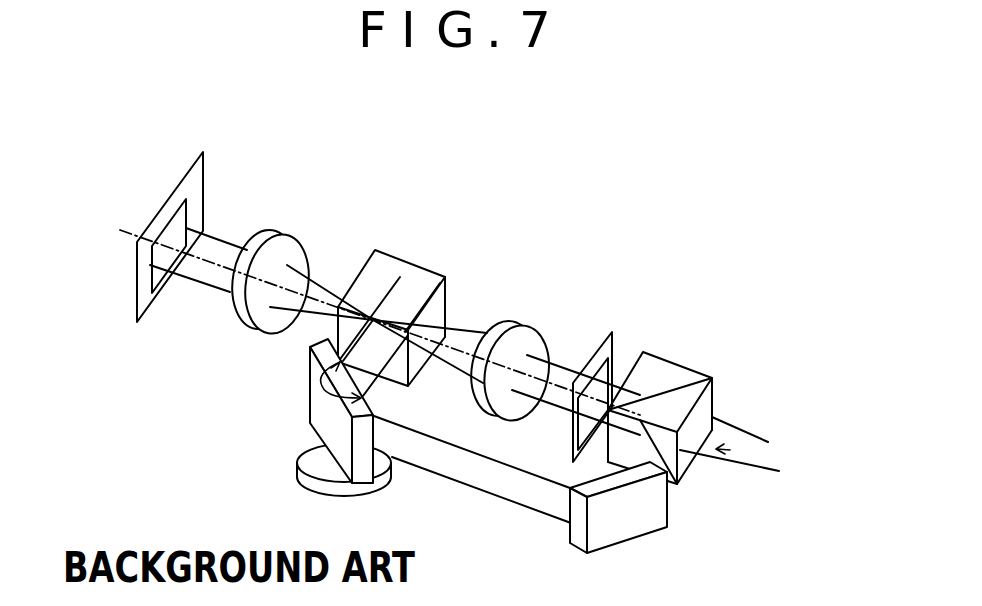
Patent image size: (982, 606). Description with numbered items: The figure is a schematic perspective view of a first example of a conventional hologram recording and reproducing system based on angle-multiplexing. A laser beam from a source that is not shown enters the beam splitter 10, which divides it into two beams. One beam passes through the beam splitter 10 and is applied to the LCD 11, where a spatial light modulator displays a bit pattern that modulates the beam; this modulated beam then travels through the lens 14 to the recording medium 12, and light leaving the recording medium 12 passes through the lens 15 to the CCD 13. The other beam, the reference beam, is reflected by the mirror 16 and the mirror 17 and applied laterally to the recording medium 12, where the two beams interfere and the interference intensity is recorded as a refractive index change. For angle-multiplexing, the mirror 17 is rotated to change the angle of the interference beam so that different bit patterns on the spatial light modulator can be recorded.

The beam splitter 10 is at (688, 366).
The LCD 11 is at (598, 345).
The recording medium 12 is at (410, 265).
The CCD 13 is at (203, 173).
The lens 14 is at (543, 337).
The lens 15 is at (302, 241).
The mirror 16 is at (647, 533).
The mirror 17 is at (310, 396).